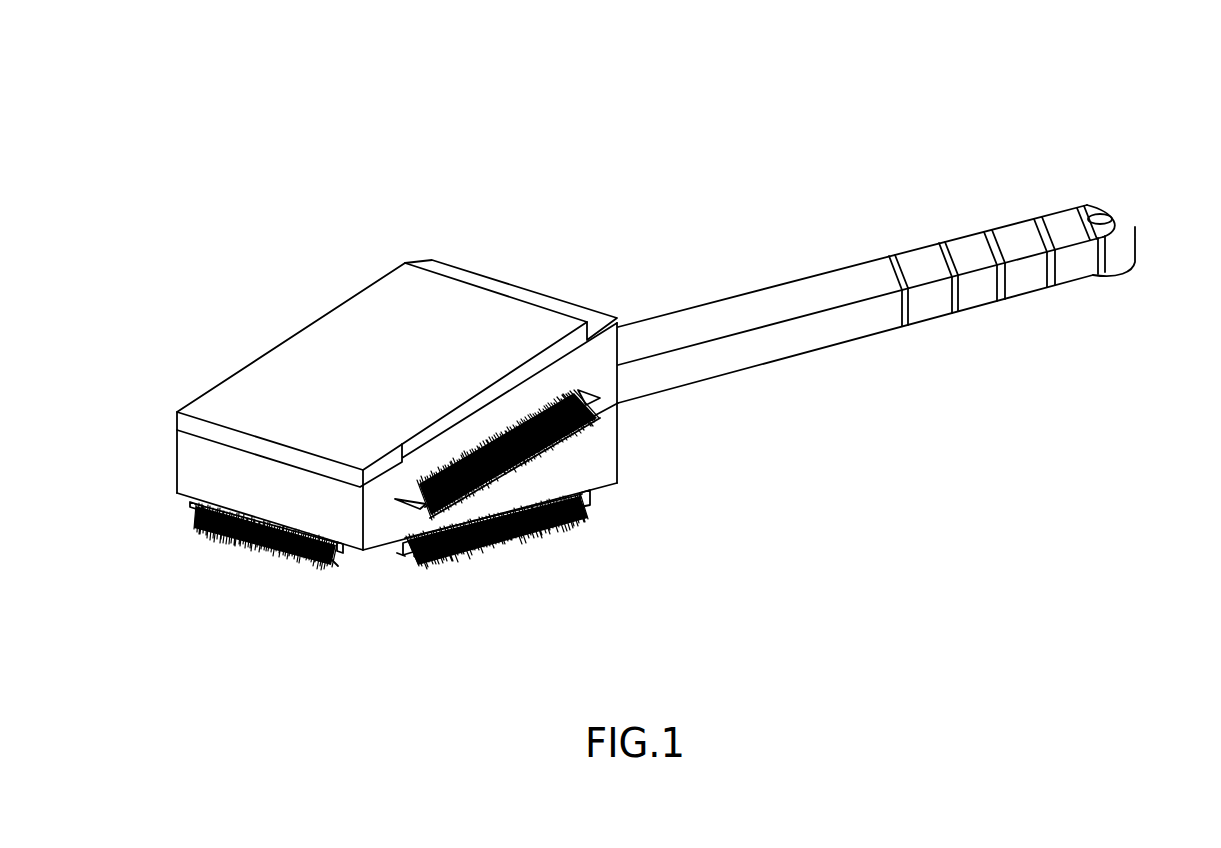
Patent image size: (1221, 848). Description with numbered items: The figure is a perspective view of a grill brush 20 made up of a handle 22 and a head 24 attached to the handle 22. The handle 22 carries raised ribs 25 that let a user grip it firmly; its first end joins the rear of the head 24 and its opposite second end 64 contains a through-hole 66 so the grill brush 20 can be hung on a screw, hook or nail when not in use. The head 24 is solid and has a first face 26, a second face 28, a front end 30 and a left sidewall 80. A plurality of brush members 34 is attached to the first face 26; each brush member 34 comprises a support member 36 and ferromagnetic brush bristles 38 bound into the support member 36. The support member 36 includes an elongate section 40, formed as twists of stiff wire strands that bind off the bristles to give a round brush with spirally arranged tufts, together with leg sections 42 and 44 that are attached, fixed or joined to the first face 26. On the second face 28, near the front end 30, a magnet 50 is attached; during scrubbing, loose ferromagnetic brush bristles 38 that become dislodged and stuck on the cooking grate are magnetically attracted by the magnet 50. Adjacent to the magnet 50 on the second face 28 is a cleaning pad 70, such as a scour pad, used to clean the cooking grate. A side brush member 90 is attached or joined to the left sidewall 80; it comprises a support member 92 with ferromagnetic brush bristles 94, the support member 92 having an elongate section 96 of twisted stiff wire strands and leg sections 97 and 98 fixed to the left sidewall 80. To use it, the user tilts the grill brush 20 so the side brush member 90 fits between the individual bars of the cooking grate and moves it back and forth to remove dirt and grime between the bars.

The grill brush 20 is at (582, 122).
The handle 22 is at (727, 300).
The head 24 is at (260, 288).
The raised ribs 25 is at (957, 246).
The first face 26 is at (370, 558).
The second face 28 is at (596, 318).
The front end 30 is at (192, 464).
The brush member 34 is at (268, 556).
The support member 36 is at (188, 510).
The ferromagnetic brush bristles 38 is at (240, 540).
The elongate section 40 is at (333, 566).
The leg section 42 is at (190, 506).
The leg section 44 is at (340, 555).
The magnet 50 is at (205, 397).
The second end 64 is at (1138, 226).
The through-hole 66 is at (1100, 213).
The cleaning pad 70 is at (352, 325).
The left sidewall 80 is at (607, 452).
The side brush member 90 is at (620, 403).
The support member 92 is at (427, 503).
The ferromagnetic brush bristles 94 is at (440, 470).
The elongate section 96 is at (400, 557).
The leg section 97 is at (410, 504).
The leg section 98 is at (587, 392).